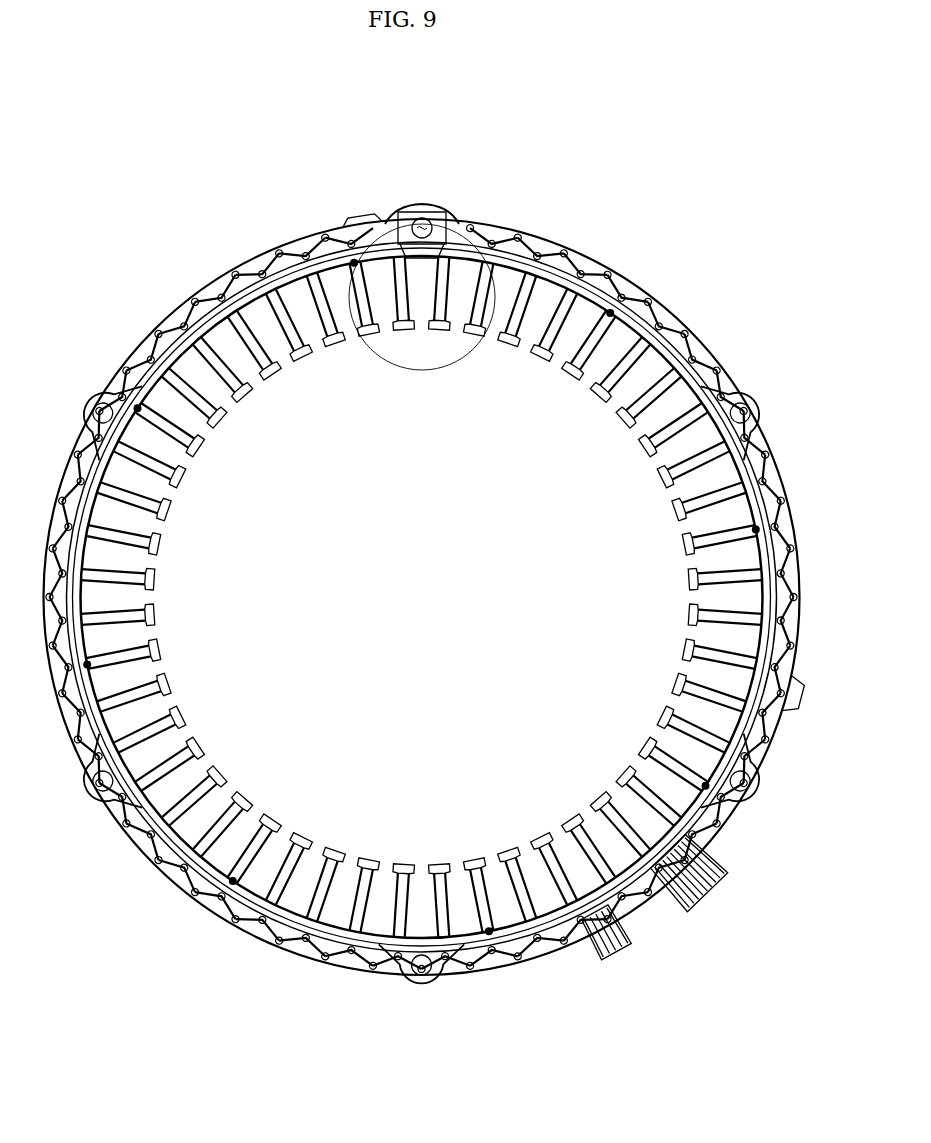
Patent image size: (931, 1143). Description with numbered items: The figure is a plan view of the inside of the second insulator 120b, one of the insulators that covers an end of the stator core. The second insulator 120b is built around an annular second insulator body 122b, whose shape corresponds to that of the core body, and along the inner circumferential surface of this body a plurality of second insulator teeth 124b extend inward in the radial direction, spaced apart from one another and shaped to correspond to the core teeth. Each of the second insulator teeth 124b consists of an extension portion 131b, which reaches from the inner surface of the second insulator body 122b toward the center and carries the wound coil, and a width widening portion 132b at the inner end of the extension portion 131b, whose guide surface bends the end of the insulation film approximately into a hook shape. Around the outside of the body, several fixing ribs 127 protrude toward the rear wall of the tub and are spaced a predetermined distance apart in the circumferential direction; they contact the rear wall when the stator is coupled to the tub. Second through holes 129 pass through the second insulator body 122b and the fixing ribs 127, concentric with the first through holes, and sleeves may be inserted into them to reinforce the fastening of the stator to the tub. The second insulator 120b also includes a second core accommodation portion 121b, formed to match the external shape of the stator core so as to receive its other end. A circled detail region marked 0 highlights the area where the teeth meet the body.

The second insulator 120b is at (441, 70).
The second core accommodation portion 121b is at (281, 253).
The second insulator body 122b is at (366, 217).
The second insulator teeth 124b is at (398, 333).
The fixing rib 127 is at (413, 223).
The second through hole 129 is at (425, 220).
The detail region 0 is at (461, 213).
The extension portion 131b is at (446, 287).
The width widening portion 132b is at (440, 334).